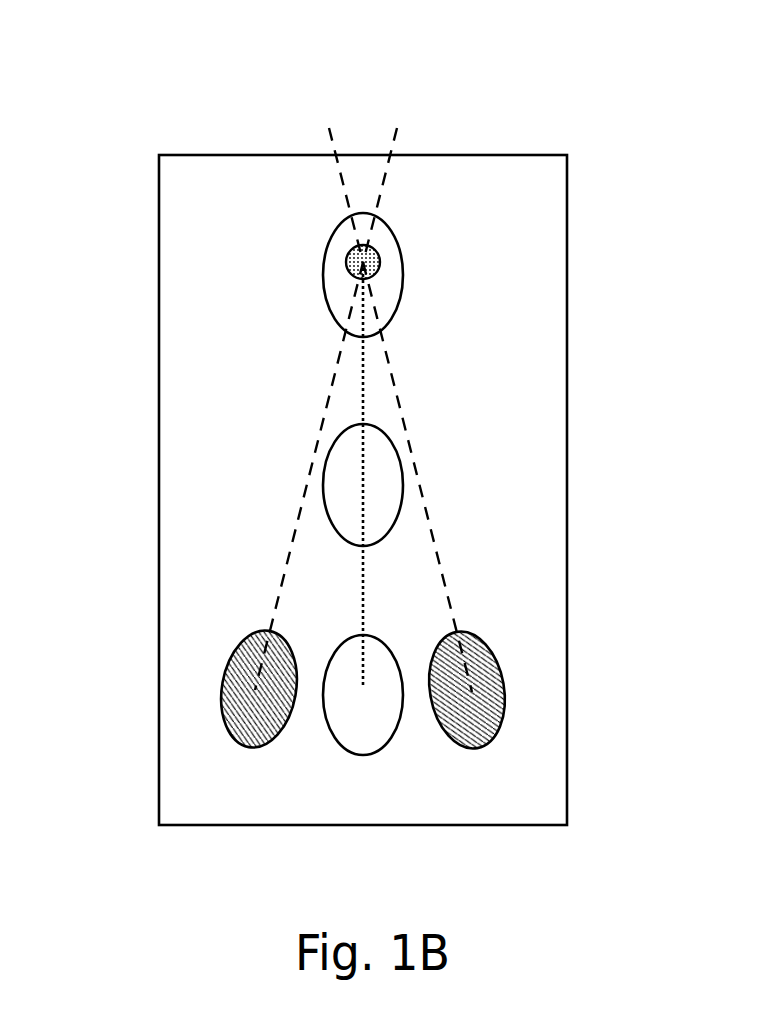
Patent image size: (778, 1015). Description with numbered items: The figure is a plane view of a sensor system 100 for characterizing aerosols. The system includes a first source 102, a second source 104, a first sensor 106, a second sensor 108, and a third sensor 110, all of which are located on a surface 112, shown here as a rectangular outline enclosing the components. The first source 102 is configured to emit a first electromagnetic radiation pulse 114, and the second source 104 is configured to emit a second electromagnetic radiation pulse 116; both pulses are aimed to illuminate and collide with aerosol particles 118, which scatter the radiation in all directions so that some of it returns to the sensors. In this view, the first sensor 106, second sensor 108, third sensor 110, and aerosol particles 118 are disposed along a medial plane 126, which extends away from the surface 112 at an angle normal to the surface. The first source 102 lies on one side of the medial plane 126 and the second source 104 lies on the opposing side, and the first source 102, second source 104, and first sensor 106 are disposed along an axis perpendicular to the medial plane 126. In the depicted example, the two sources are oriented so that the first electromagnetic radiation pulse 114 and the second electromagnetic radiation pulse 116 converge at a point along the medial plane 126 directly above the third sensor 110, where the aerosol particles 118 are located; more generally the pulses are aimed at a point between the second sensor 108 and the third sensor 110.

The sensor system 100 is at (125, 81).
The first source 102 is at (503, 658).
The second source 104 is at (234, 651).
The first sensor 106 is at (377, 755).
The second sensor 108 is at (324, 483).
The third sensor 110 is at (324, 270).
The surface 112 is at (567, 183).
The first electromagnetic radiation pulse 114 is at (427, 468).
The second electromagnetic radiation pulse 116 is at (320, 415).
The aerosol particles 118 is at (380, 259).
The medial plane 126 is at (355, 588).